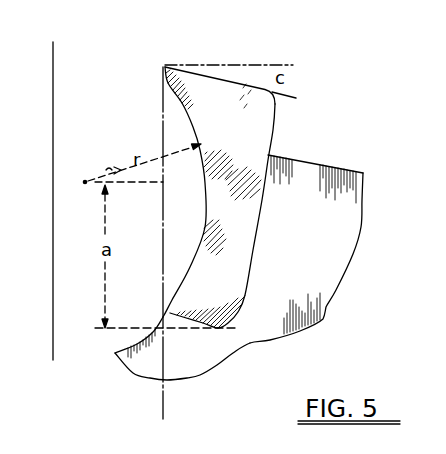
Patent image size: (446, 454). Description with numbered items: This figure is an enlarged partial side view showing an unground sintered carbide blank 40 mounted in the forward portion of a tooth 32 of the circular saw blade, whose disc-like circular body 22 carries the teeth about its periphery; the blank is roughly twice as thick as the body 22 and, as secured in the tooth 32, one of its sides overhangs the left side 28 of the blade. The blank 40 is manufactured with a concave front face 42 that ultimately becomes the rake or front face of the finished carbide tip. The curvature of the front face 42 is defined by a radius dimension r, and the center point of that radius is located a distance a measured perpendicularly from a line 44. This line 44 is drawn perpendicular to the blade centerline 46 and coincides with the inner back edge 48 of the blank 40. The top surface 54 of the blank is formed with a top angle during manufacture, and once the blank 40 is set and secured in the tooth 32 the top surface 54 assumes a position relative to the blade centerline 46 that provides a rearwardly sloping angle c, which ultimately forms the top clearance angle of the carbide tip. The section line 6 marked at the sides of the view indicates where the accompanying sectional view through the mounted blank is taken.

The section line 6- 6 is at (46, 343).
The circular body 22 is at (329, 318).
The left side 28 is at (196, 361).
The tooth 32 is at (335, 182).
The sintered carbide blank 40 is at (280, 133).
The concave front face 42 is at (205, 238).
The line 44 is at (128, 329).
The blade centerline 46 is at (163, 405).
The inner back edge 48 is at (243, 324).
The top surface 54 is at (236, 82).